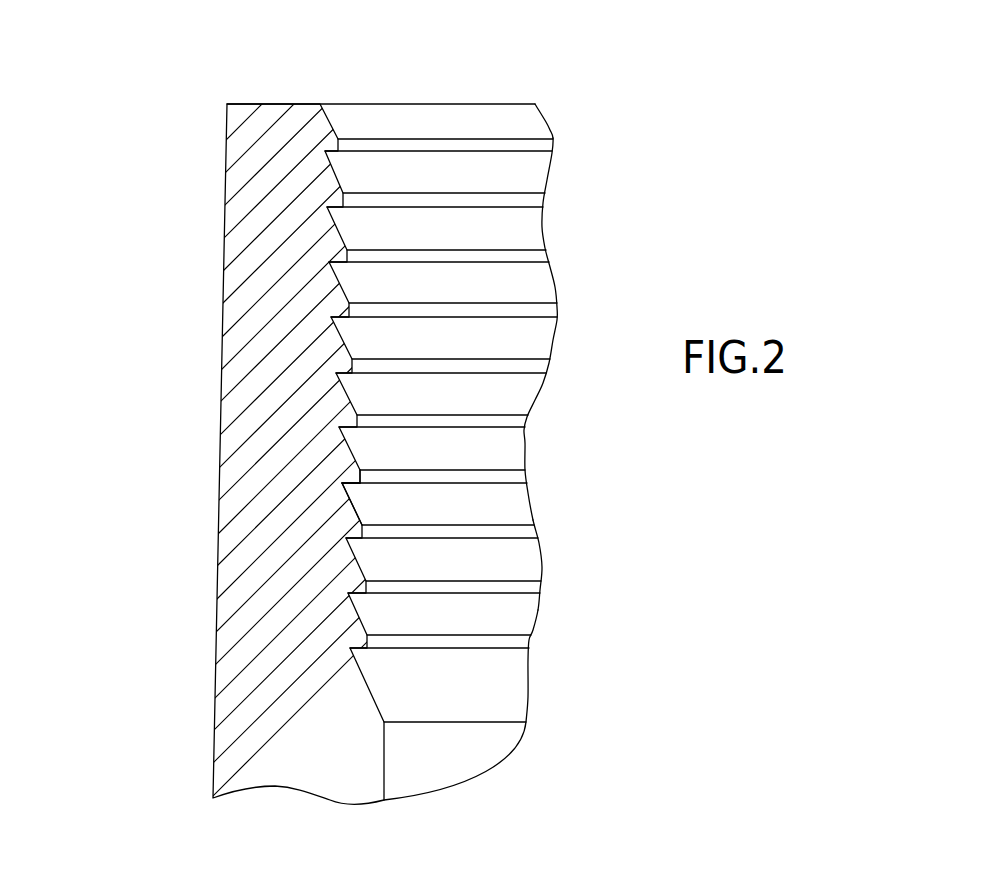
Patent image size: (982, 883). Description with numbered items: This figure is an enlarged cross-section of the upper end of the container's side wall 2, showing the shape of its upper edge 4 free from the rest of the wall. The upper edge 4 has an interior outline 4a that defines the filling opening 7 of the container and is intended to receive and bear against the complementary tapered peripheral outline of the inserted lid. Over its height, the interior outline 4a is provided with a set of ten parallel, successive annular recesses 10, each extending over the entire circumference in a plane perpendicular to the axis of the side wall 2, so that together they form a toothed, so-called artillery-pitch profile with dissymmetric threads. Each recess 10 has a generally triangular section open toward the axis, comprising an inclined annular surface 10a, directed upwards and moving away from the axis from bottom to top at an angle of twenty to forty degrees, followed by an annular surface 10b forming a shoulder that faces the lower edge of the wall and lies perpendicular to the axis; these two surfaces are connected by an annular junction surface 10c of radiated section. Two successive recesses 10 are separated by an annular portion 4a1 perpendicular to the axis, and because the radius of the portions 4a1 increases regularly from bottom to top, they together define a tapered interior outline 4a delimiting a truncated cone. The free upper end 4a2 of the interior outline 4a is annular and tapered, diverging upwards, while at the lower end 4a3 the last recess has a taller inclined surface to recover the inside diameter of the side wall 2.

The side wall 2 is at (370, 402).
The upper edge 4 is at (187, 265).
The opening 7 is at (382, 104).
The interior outline 4a is at (557, 310).
The annular portion 4a1 is at (533, 530).
The free upper end 4a2 is at (545, 122).
The lower end 4a3 is at (530, 688).
The annular recess 10 is at (518, 449).
The inclined annular surface 10a is at (343, 505).
The annular shoulder surface 10b is at (348, 477).
The annular junction surface 10c is at (335, 481).